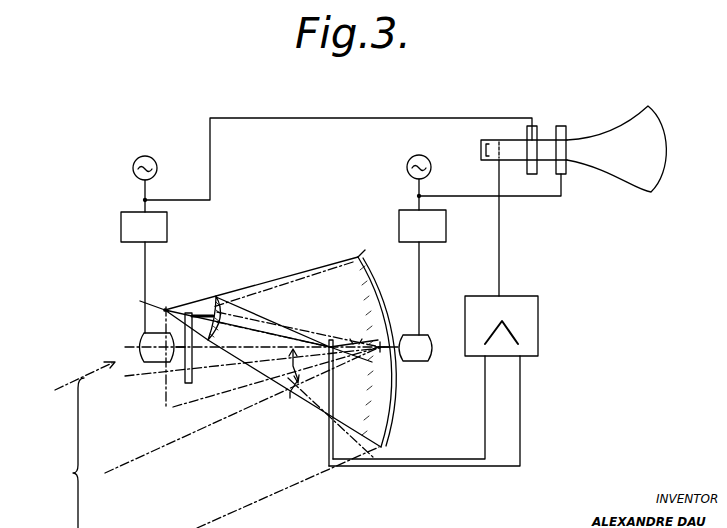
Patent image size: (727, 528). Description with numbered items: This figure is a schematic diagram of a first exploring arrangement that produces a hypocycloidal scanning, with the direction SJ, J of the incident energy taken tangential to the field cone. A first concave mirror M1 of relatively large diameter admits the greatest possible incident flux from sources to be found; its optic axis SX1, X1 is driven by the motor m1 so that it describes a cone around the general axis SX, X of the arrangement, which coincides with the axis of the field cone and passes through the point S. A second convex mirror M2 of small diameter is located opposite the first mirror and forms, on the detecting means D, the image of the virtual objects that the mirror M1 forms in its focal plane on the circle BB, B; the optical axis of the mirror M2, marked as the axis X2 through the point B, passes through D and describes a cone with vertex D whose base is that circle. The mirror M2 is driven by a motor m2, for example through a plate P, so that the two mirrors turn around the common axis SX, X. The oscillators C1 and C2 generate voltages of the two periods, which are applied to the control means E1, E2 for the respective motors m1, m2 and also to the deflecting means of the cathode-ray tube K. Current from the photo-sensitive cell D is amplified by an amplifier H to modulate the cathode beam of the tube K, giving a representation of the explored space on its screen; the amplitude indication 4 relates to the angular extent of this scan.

The oscillator C2 is at (137, 163).
The oscillator C1 is at (411, 163).
The control means E2 is at (167, 228).
The control means E1 is at (446, 233).
The cathode-ray tube K is at (617, 125).
The amplifier H is at (533, 312).
The first concave mirror M1 is at (376, 340).
The second convex mirror M2 is at (207, 309).
The plate P is at (192, 381).
The motor m2 is at (150, 356).
The motor m1 is at (418, 362).
The detecting means D is at (352, 393).
The point S is at (378, 358).
The circle BB B is at (269, 352).
The general axis SX X is at (245, 348).
The optic axis SX1 X1 is at (153, 378).
The axis X2 is at (138, 302).
The direction SJ J is at (242, 410).
The oscillation amplitude 4 is at (292, 387).